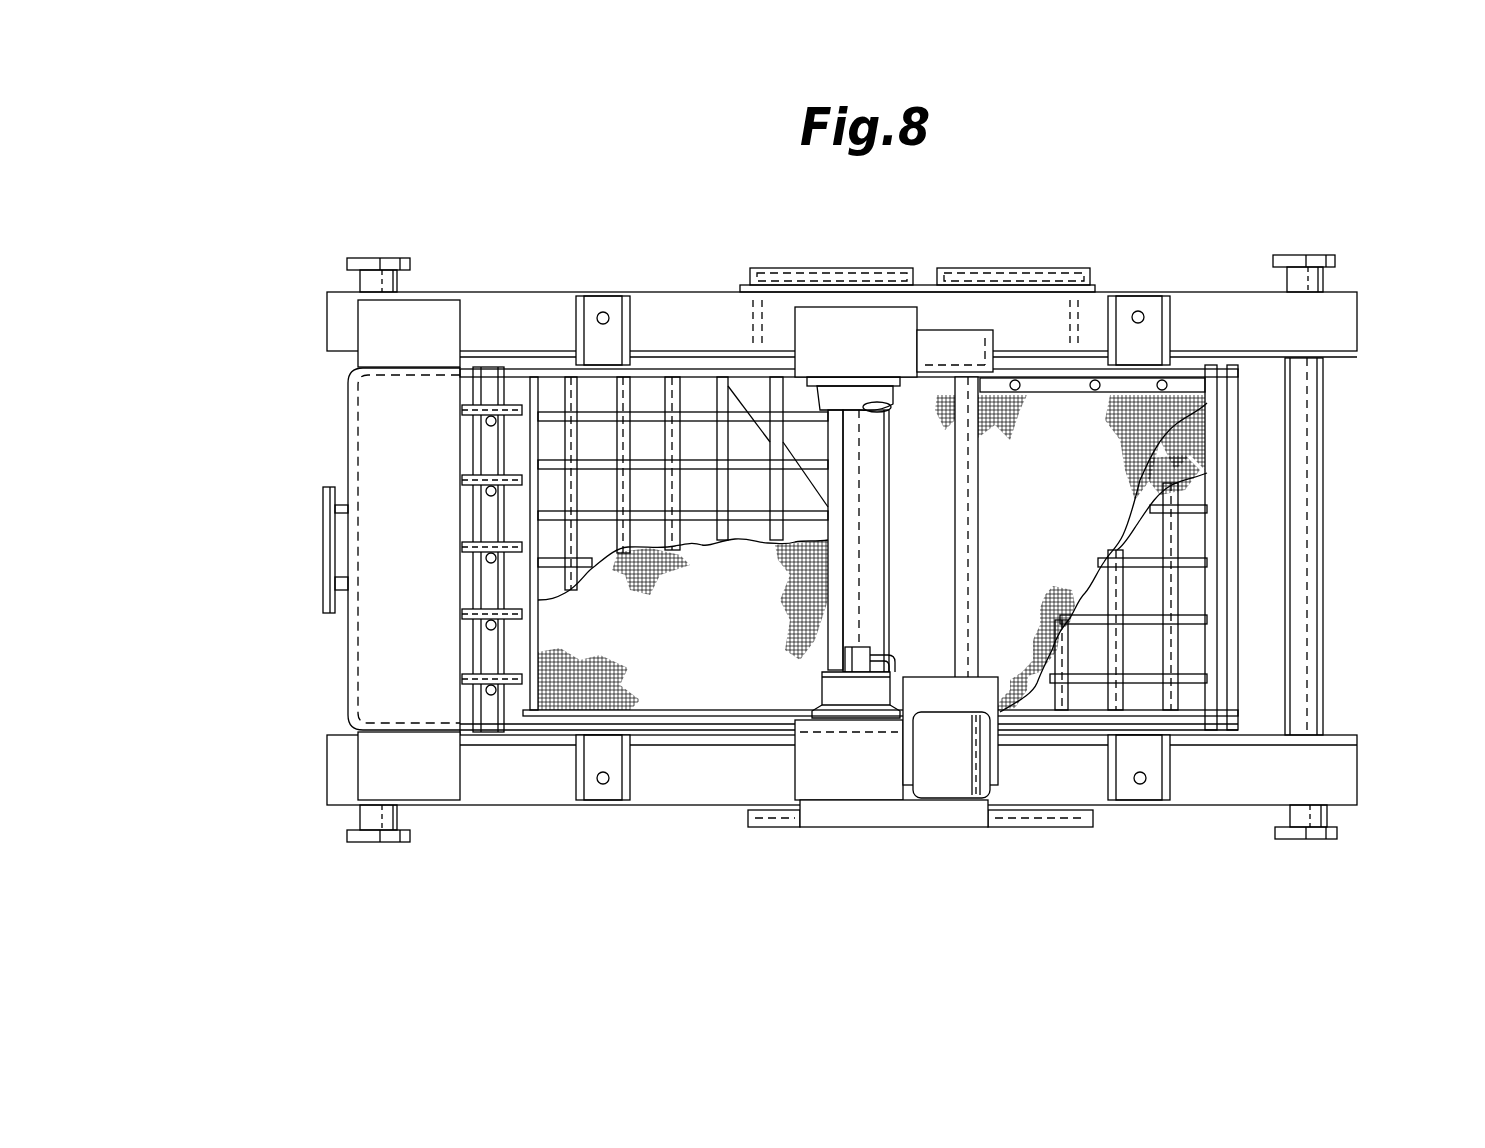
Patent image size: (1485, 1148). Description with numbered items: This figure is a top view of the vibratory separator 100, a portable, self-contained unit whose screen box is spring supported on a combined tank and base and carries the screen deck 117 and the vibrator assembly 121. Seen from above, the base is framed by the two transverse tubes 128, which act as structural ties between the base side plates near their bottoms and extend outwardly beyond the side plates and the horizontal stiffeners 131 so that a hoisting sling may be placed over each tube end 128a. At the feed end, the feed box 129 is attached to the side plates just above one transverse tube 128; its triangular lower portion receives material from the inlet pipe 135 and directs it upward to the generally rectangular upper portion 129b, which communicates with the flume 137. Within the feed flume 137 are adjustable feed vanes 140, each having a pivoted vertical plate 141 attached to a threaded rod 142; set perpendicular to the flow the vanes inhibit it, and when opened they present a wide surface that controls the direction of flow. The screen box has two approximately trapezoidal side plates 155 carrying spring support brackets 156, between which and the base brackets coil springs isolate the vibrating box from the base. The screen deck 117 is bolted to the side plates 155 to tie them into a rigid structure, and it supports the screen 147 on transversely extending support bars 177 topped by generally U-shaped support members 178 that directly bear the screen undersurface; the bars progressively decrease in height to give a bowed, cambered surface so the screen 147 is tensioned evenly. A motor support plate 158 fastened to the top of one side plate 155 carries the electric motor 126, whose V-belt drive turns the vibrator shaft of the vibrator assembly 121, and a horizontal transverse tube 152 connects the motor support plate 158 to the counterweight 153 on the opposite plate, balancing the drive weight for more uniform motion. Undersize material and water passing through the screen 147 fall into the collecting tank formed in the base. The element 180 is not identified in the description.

The vibratory separator 100 is at (318, 463).
The screen deck 117 is at (1237, 508).
The vibrator assembly 121 is at (795, 687).
The electric motor 126 is at (946, 771).
The transverse tube 128 is at (1305, 607).
The tube end 128a is at (375, 838).
The feed box 129 is at (343, 650).
The upper portion of feed box 129b is at (400, 676).
The horizontal stiffener 131 is at (1338, 771).
The inlet pipe 135 is at (328, 540).
The flume 137 is at (538, 611).
The adjustable feed vane 140 is at (450, 440).
The pivoted vertical plate 141 is at (468, 555).
The threaded rod 142 is at (510, 414).
The screen 147 is at (718, 665).
The horizontal transverse tube 152 is at (963, 540).
The counterweight 153 is at (945, 342).
The side plate of screen box 155 is at (700, 722).
The spring support bracket 156 is at (600, 310).
The motor support plate 158 is at (907, 747).
The support bar 177 is at (646, 414).
The support member 178 is at (722, 452).
The pump 180 is at (870, 686).